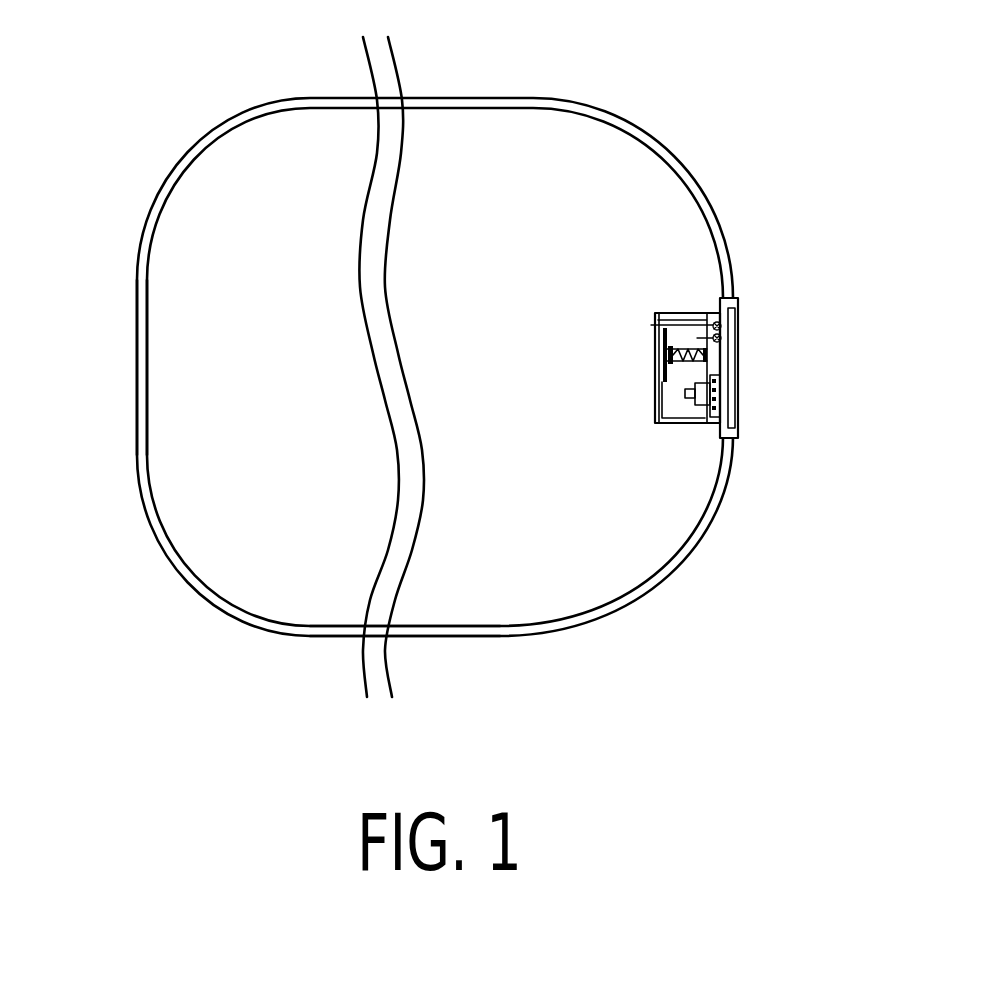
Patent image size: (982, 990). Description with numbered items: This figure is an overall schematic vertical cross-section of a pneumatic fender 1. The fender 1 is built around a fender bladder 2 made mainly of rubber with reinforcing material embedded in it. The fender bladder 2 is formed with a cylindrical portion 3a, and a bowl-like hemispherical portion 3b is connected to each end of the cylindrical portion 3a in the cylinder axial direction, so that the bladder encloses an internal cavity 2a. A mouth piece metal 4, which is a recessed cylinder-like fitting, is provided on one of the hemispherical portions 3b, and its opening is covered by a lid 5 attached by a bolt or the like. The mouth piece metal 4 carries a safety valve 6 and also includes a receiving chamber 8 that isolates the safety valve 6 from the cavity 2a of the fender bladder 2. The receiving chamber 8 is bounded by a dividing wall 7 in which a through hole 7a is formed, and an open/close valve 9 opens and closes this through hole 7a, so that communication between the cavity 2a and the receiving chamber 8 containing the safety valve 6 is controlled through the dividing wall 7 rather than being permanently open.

The pneumatic fender 1 is at (155, 185).
The fender bladder 2 is at (455, 98).
The cavity 2a is at (438, 605).
The cylindrical portion 3a is at (493, 627).
The hemispherical portion 3b is at (140, 327).
The mouth piece metal 4 is at (737, 297).
The lid 5 is at (738, 380).
The safety valve 6 is at (697, 397).
The dividing wall 7 is at (655, 408).
The through hole 7a is at (657, 373).
The receiving chamber 8 is at (677, 310).
The open/close valve 9 is at (657, 353).